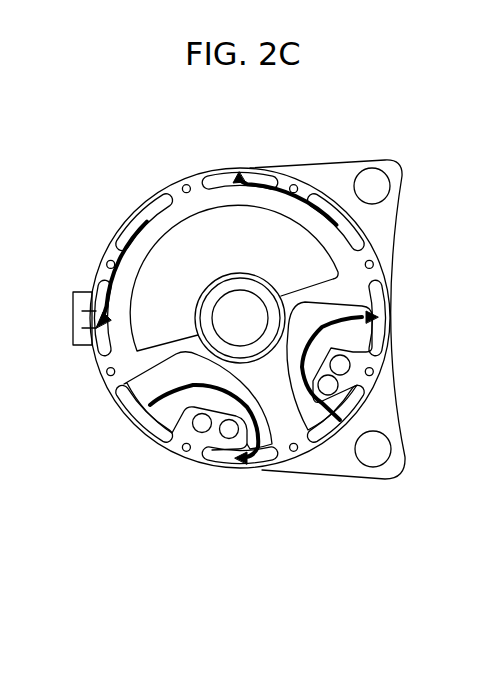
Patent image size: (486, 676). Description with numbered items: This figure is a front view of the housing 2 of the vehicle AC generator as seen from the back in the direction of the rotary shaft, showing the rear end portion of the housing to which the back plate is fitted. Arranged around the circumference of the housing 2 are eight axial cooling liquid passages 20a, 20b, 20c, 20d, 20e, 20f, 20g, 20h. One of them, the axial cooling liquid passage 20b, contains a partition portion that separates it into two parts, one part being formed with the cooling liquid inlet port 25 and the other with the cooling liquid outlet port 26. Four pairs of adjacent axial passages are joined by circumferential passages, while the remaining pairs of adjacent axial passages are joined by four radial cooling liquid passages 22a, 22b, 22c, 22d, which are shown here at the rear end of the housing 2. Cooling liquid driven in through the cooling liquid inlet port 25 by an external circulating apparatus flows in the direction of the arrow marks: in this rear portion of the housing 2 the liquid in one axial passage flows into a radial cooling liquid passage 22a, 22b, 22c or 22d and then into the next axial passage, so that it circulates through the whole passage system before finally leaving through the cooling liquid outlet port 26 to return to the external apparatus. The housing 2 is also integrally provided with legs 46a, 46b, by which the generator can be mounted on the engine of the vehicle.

The housing 2 is at (238, 168).
The axial cooling liquid passage 20a is at (155, 204).
The axial cooling liquid passage 20b is at (222, 175).
The axial cooling liquid passage 20c is at (353, 212).
The axial cooling liquid passage 20d is at (383, 304).
The axial cooling liquid passage 20e is at (331, 452).
The axial cooling liquid passage 20f is at (215, 460).
The axial cooling liquid passage 20g is at (147, 431).
The axial cooling liquid passage 20h is at (93, 350).
The radial cooling liquid passage 22a is at (148, 216).
The radial cooling liquid passage 22b is at (343, 243).
The radial cooling liquid passage 22c is at (357, 333).
The radial cooling liquid passage 22d is at (141, 389).
The cooling liquid inlet port 25 is at (82, 311).
The cooling liquid outlet port 26 is at (82, 328).
The leg 46a is at (390, 404).
The leg 46b is at (337, 170).